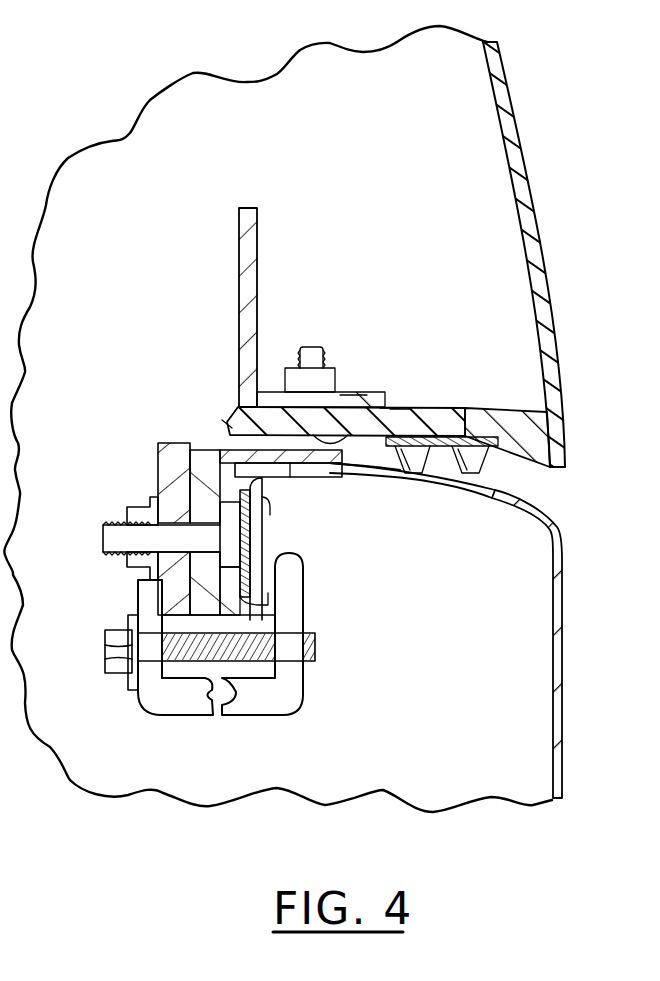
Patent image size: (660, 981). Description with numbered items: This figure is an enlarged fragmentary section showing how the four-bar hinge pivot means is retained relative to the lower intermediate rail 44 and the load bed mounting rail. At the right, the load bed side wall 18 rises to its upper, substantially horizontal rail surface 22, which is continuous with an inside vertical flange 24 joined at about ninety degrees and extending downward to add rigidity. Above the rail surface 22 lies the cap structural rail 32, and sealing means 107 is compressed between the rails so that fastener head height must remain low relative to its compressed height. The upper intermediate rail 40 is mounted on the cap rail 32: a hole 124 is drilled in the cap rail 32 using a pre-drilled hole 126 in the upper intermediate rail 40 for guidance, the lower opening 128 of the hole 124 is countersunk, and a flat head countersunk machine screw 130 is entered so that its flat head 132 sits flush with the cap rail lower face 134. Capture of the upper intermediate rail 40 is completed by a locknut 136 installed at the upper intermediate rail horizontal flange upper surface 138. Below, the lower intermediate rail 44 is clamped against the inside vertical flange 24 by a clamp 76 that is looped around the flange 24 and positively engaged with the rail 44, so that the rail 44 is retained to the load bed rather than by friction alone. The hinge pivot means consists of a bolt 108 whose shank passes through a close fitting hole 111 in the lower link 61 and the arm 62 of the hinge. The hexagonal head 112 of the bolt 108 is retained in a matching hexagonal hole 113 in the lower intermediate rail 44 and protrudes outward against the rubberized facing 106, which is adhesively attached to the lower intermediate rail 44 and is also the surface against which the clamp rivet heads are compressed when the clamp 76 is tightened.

The side wall 18 is at (562, 697).
The rail surface 22 is at (497, 490).
The inside vertical flange 24 is at (288, 478).
The cap structural rail 32 is at (441, 432).
The upper intermediate rail 40 is at (245, 270).
The lower intermediate rail 44 is at (300, 602).
The lower link 61 is at (207, 443).
The arm 62 is at (158, 453).
The clamp 76 is at (275, 700).
The rubberized facing 106 is at (298, 568).
The sealing means 107 is at (517, 450).
The bolt 108 is at (104, 535).
The close fitting hole 111 is at (140, 600).
The hexagonal head 112 is at (295, 512).
The hexagonal hole 113 is at (236, 500).
The hole 124 is at (238, 410).
The pre-drilled hole 126 is at (293, 390).
The lower opening 128 is at (368, 392).
The flat head countersunk machine screw 130 is at (233, 428).
The flat head 132 is at (389, 404).
The cap rail lower face 134 is at (398, 406).
The locknut 136 is at (340, 392).
The upper intermediate rail horizontal flange upper surface 138 is at (350, 392).